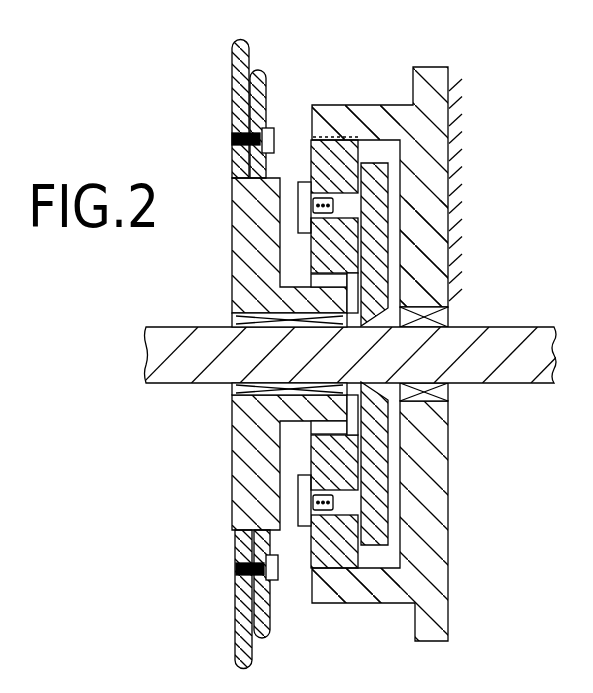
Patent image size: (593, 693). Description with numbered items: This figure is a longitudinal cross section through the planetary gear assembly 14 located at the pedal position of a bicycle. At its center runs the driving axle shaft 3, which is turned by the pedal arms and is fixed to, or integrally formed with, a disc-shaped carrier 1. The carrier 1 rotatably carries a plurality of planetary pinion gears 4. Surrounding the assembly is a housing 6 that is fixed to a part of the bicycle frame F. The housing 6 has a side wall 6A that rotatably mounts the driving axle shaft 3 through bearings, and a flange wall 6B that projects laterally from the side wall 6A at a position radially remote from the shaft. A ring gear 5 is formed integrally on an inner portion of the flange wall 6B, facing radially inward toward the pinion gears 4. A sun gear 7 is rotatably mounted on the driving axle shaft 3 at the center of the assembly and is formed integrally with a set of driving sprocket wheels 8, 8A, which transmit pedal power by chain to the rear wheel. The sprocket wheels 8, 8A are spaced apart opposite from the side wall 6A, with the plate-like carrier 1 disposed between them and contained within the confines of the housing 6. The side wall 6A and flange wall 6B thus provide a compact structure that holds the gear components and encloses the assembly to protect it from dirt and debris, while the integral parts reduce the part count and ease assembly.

The carrier 1 is at (372, 208).
The driving axle shaft 3 is at (167, 362).
The planetary pinion gears 4 is at (298, 190).
The ring gear 5 is at (340, 604).
The housing 6 is at (420, 351).
The side wall 6A is at (428, 288).
The flange wall 6B is at (323, 116).
The sun gear 7 is at (289, 354).
The driving sprocket wheel 8 is at (259, 74).
The driving sprocket wheel 8A is at (230, 52).
The planetary gear assembly 14 is at (305, 98).
The bicycle frame F is at (458, 102).